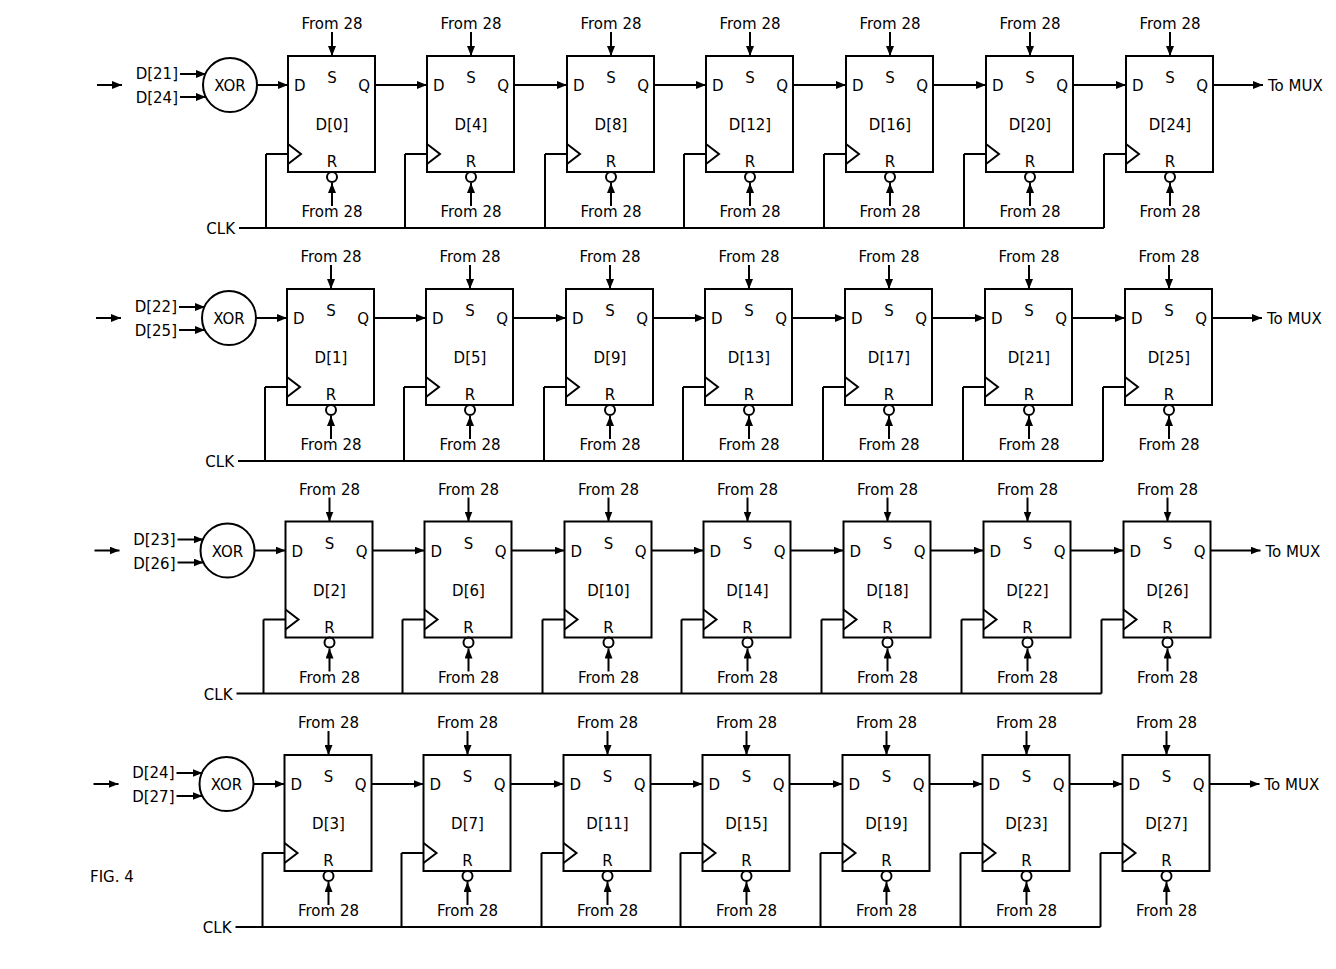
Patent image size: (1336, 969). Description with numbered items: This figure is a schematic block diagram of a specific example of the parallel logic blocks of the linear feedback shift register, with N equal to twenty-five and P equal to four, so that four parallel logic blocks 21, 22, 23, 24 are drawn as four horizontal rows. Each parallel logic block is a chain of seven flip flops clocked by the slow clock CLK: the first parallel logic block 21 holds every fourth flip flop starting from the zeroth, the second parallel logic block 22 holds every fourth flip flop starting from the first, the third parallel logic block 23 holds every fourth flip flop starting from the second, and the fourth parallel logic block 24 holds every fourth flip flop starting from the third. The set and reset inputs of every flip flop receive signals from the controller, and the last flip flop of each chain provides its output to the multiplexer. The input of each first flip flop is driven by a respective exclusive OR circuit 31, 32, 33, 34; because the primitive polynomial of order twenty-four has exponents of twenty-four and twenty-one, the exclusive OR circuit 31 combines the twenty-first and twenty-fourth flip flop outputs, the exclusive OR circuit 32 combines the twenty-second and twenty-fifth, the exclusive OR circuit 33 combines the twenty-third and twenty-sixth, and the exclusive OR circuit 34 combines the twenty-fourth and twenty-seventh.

The first parallel logic block 21 is at (97, 86).
The second parallel logic block 22 is at (96, 319).
The third parallel logic block 23 is at (95, 552).
The fourth parallel logic block 24 is at (94, 785).
The exclusive OR circuit 31 is at (224, 71).
The exclusive OR circuit 32 is at (223, 304).
The exclusive OR circuit 33 is at (222, 537).
The exclusive OR circuit 34 is at (221, 770).